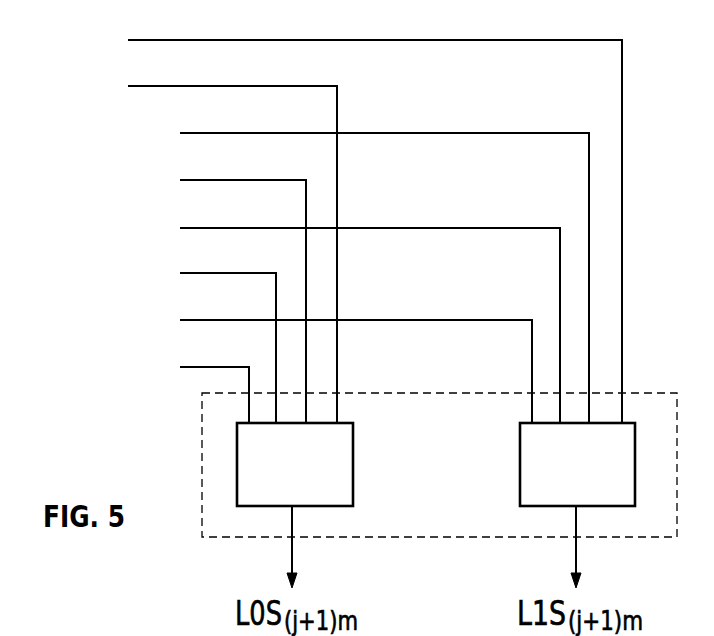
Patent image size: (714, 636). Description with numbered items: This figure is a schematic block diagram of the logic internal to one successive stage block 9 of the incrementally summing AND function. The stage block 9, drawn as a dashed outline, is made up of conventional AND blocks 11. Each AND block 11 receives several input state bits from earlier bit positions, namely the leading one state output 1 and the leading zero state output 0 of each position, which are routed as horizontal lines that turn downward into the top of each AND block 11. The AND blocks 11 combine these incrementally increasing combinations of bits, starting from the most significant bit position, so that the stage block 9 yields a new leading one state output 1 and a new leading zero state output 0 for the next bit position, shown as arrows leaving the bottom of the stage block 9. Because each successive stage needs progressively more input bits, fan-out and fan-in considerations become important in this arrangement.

The successive stage block 9 is at (441, 520).
The AND block 11 is at (342, 495).
The L1S input signal lines 1 is at (329, 212).
The L0S input signal lines 0 is at (186, 239).